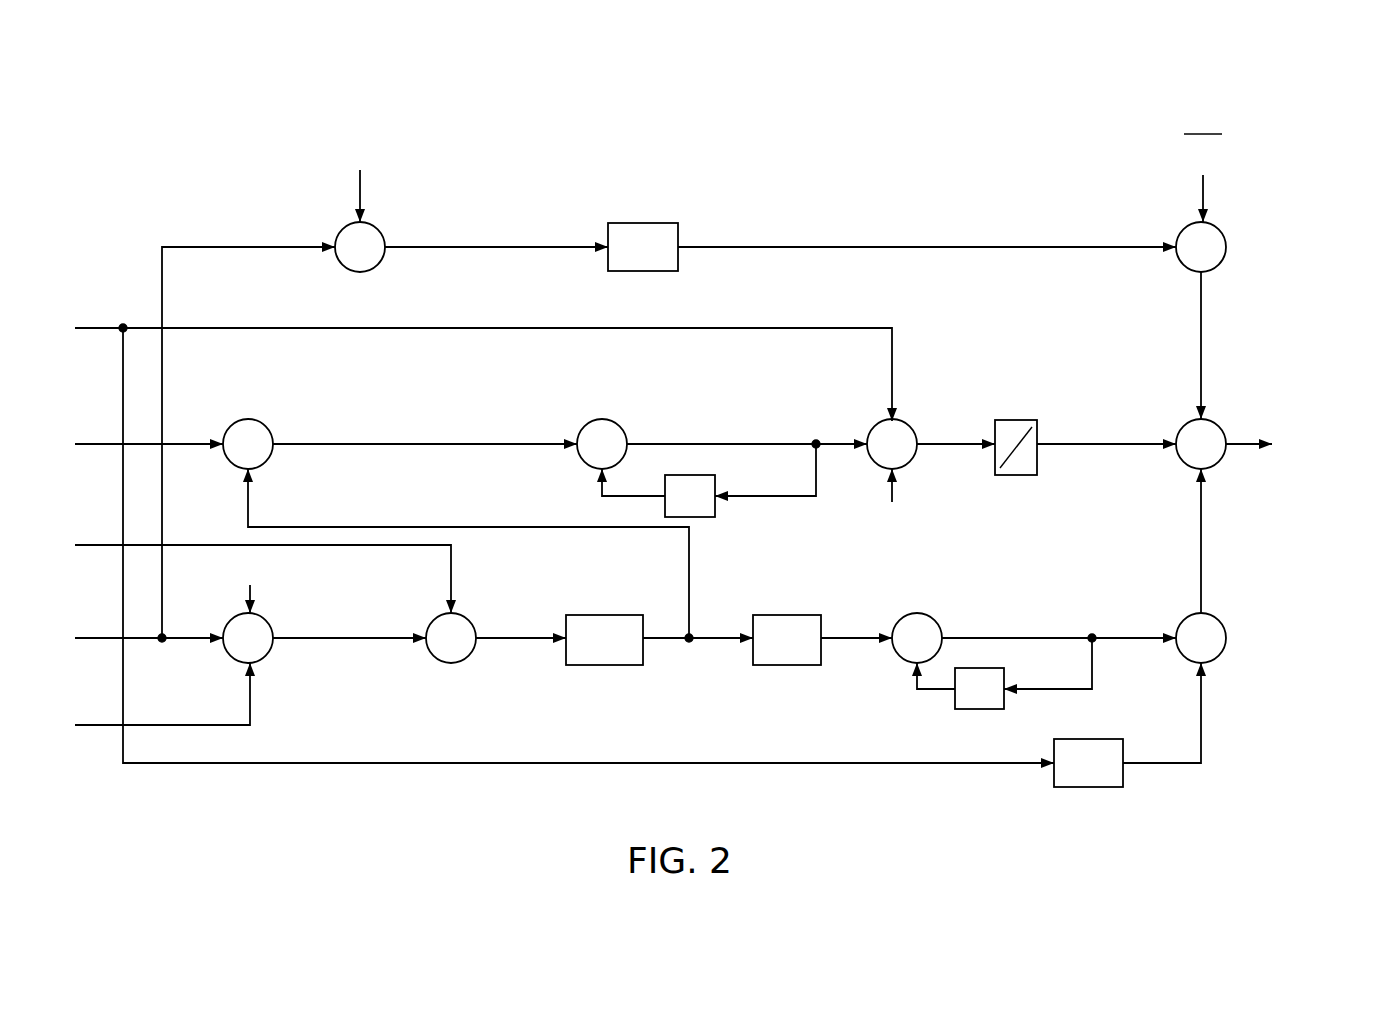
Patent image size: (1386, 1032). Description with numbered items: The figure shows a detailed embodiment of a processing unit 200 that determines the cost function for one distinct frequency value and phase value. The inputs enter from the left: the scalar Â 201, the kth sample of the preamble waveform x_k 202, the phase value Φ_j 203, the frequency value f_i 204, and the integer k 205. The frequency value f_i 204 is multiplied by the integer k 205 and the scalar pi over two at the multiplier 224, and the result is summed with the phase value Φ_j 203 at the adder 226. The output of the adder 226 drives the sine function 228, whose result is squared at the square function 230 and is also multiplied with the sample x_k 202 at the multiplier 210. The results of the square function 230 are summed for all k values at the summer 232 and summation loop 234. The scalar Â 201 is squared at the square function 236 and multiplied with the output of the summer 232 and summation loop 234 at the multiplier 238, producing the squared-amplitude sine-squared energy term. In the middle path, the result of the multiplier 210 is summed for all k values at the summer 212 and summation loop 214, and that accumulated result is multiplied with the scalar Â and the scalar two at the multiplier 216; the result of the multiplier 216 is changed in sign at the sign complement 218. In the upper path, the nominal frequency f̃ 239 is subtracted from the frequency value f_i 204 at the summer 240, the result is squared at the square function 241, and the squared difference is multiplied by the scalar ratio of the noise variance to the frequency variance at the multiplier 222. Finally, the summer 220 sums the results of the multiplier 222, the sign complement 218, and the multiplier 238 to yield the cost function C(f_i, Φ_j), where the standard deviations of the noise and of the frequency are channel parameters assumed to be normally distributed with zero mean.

The correlation computation system 200 is at (990, 169).
The scalar Â 201 is at (541, 524).
The kth sample of the preamble waveform x_k 202 is at (125, 430).
The phase value Φ_j 203 is at (239, 558).
The frequency value f_i 204 is at (181, 452).
The integer k 205 is at (139, 701).
The multiplier 210 is at (456, 523).
The summer 212 is at (722, 438).
The summation loop 214 is at (709, 484).
The multiplier 216 is at (931, 470).
The sign complement 218 is at (1085, 432).
The summer 220 is at (1271, 440).
The multiplier 222 is at (1218, 262).
The multiplier 224 is at (324, 609).
The adder 226 is at (496, 635).
The sine function 228 is at (659, 628).
The square function 230 is at (822, 628).
The summer 232 is at (1034, 635).
The summation loop 234 is at (1004, 676).
The square function 236 is at (1127, 725).
The multiplier 238 is at (1218, 566).
The nominal frequency f̃ 239 is at (342, 170).
The summer 240 is at (471, 235).
The square function 241 is at (892, 231).